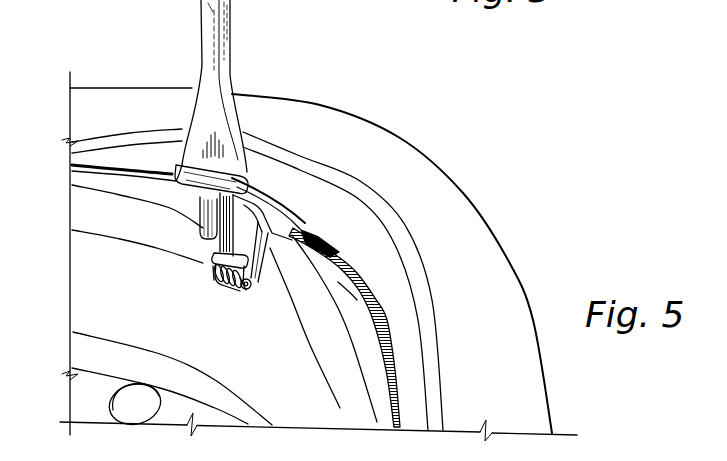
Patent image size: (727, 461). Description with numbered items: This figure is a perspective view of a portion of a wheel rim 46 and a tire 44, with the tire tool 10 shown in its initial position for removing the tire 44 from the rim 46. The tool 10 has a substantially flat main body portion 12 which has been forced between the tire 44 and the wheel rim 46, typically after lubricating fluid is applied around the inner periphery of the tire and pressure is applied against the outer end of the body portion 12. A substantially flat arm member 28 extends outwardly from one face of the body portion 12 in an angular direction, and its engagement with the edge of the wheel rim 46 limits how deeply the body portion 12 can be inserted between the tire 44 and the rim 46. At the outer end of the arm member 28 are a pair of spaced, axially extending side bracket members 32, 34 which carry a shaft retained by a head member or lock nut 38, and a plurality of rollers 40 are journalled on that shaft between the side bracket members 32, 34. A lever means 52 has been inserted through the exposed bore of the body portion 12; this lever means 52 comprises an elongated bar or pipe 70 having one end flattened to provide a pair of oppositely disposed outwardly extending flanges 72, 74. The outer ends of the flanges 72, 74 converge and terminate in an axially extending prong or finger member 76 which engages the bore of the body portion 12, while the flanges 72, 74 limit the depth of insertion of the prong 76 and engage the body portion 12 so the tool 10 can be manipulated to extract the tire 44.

The tire tool 10 is at (262, 197).
The main body portion 12 is at (298, 223).
The arm member 28 is at (257, 248).
The side bracket member 32 is at (205, 262).
The side bracket member 34 is at (247, 292).
The head member or lock nut 38 is at (252, 289).
The rollers 40 is at (220, 288).
The tire 44 is at (460, 200).
The wheel rim 46 is at (79, 273).
The lever means 52 is at (206, 15).
The elongated bar or pipe 70 is at (232, 38).
The flange 72 is at (238, 127).
The flange 74 is at (193, 123).
The prong or finger member 76 is at (199, 215).